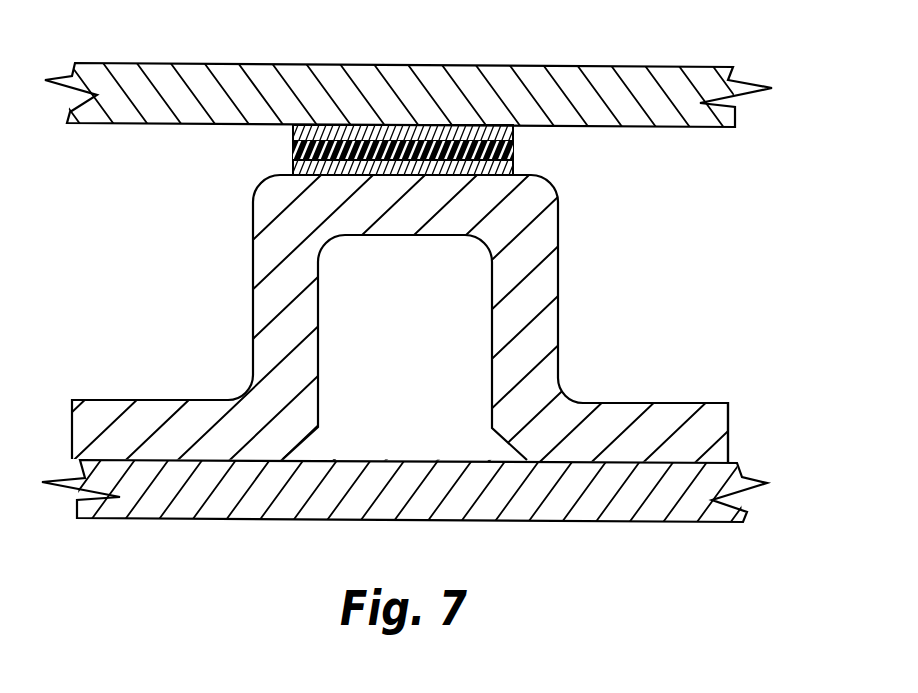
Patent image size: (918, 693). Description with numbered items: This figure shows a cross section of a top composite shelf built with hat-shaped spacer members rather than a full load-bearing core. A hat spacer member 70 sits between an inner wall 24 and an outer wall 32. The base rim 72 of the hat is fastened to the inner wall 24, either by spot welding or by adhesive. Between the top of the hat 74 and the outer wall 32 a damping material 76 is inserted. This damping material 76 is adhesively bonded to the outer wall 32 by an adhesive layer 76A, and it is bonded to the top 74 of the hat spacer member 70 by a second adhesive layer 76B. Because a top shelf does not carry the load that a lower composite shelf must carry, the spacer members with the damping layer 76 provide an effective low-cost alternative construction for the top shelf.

The inner wall 24 is at (645, 523).
The outer wall 32 is at (705, 72).
The hat spacer member 70 is at (273, 315).
The base rim 72 is at (622, 428).
The top of the hat 74 is at (480, 177).
The damping material 76 is at (378, 207).
The adhesive layer 76A is at (290, 135).
The adhesive layer 76B is at (290, 172).